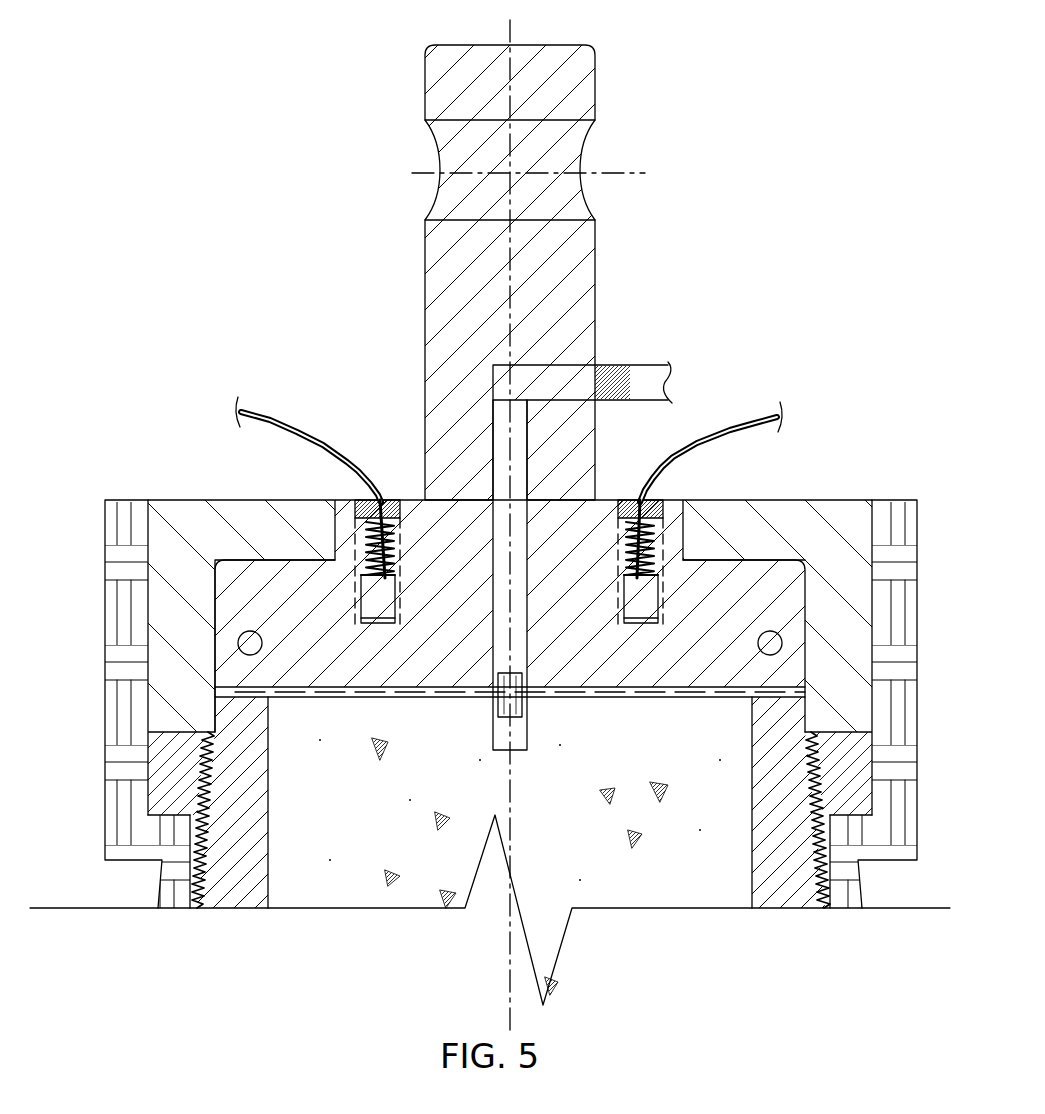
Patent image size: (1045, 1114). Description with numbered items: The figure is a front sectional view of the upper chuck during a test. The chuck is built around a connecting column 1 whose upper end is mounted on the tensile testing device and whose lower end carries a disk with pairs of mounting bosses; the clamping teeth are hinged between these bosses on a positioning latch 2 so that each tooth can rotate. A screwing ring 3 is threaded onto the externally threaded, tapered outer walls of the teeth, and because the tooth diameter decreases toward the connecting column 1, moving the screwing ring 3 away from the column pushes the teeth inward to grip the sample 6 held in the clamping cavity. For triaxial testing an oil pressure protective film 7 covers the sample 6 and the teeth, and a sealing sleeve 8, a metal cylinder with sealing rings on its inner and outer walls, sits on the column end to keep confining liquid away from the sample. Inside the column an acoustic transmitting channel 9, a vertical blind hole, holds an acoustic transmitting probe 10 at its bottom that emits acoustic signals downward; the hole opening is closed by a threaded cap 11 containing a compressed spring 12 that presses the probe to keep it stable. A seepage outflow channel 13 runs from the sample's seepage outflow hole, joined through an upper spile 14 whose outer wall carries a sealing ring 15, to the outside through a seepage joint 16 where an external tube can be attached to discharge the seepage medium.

The connecting column 1 is at (445, 428).
The positioning latch 2 is at (238, 642).
The screwing ring 3 is at (176, 757).
The sample 6 is at (400, 880).
The oil pressure protective film 7 is at (130, 550).
The sealing sleeve 8 is at (258, 525).
The acoustic transmitting channel 9 is at (360, 590).
The acoustic transmitting probe 10 is at (385, 600).
The threaded cap 11 is at (352, 500).
The spring 12 is at (392, 548).
The seepage outflow channel 13 is at (548, 380).
The upper spile 14 is at (516, 720).
The sealing ring 15 is at (524, 704).
The seepage joint 16 is at (622, 382).